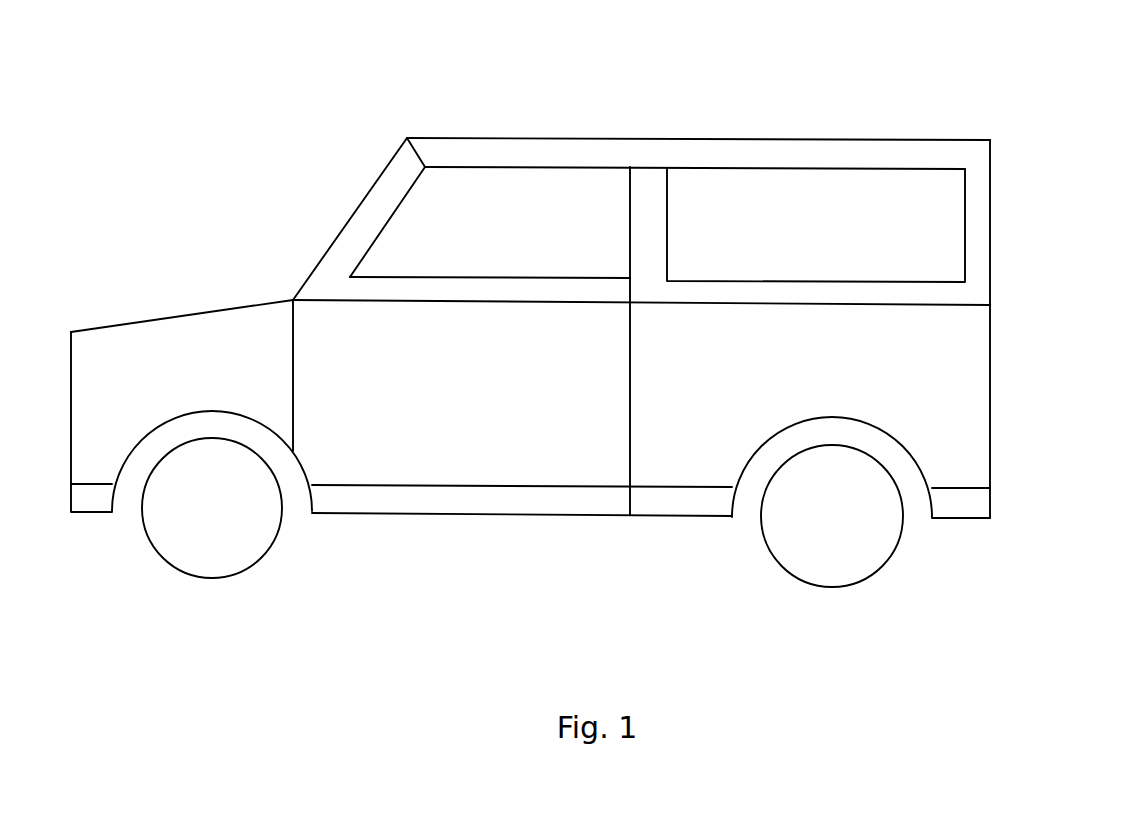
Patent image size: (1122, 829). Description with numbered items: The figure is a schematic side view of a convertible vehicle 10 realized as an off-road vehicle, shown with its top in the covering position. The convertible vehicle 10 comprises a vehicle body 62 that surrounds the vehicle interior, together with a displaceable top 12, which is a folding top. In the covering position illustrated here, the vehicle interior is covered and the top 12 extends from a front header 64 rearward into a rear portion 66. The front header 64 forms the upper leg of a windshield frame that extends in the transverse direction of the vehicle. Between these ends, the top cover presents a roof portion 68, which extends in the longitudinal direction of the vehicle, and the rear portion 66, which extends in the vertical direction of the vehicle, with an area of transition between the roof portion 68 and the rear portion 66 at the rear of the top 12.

The convertible vehicle 10 is at (588, 302).
The top 12 is at (728, 153).
The vehicle body 62 is at (992, 408).
The front header 64 is at (406, 152).
The rear portion 66 is at (992, 238).
The roof portion 68 is at (795, 138).